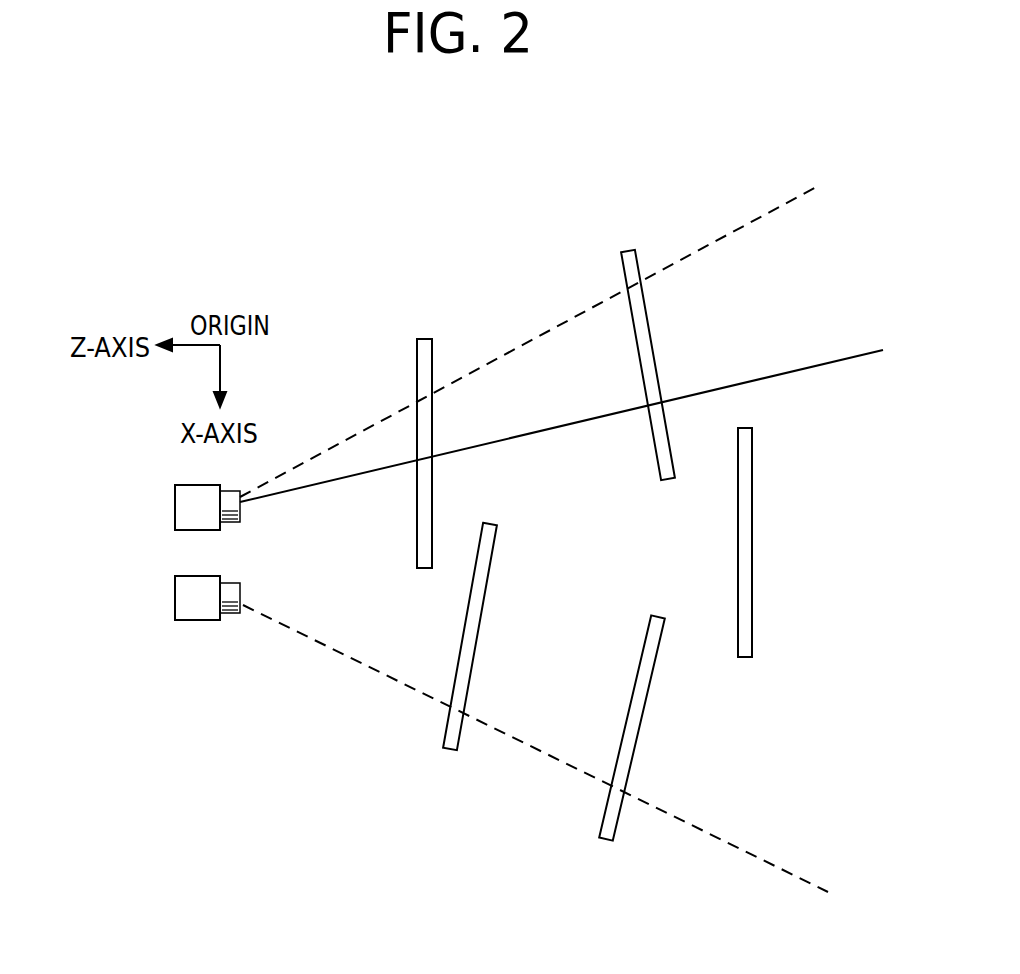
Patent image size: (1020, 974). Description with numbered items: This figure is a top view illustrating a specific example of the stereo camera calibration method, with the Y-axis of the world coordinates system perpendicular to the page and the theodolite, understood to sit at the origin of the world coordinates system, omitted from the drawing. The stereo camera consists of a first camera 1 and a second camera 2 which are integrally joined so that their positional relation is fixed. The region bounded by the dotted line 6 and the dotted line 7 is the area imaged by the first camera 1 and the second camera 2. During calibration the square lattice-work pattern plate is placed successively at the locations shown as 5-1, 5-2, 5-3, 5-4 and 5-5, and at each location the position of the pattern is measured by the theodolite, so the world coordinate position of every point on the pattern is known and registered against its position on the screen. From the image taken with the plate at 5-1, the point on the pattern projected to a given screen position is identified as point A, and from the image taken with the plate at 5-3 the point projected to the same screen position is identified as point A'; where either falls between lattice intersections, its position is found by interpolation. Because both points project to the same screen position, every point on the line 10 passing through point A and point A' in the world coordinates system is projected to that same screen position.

The first camera 1 is at (175, 503).
The second camera 2 is at (175, 592).
The first position of square lattice-work pattern plate 5-1 is at (417, 368).
The second position of square lattice-work pattern plate 5-2 is at (442, 730).
The third position of square lattice-work pattern plate 5-3 is at (620, 272).
The fourth position of square lattice-work pattern plate 5-4 is at (752, 561).
The fifth position of square lattice-work pattern plate 5-5 is at (602, 820).
The dotted line 6 is at (737, 230).
The dotted line 7 is at (760, 860).
The line N 10 is at (834, 363).
The point A is at (392, 507).
The point A' is at (619, 454).